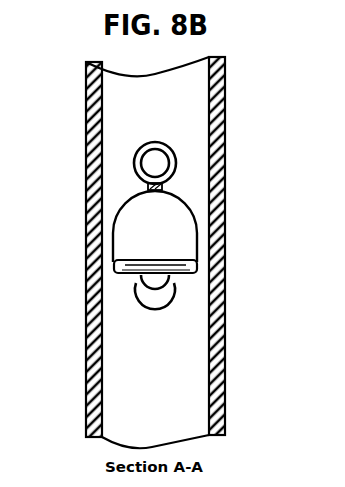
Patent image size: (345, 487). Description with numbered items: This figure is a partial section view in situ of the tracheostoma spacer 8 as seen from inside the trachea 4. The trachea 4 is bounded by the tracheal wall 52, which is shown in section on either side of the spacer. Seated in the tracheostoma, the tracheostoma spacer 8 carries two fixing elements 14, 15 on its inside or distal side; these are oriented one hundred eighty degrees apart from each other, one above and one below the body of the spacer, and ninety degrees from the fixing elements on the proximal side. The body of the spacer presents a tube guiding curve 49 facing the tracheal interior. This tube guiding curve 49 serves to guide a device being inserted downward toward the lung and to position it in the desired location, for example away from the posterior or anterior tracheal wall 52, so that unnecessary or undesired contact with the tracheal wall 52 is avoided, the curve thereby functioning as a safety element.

The trachea 4 is at (115, 378).
The tracheal wall 52 is at (86, 422).
The fixing element 14 is at (106, 164).
The tube guiding curve 49 is at (155, 228).
The tracheostoma spacer 8 is at (112, 247).
The fixing element 15 is at (126, 289).